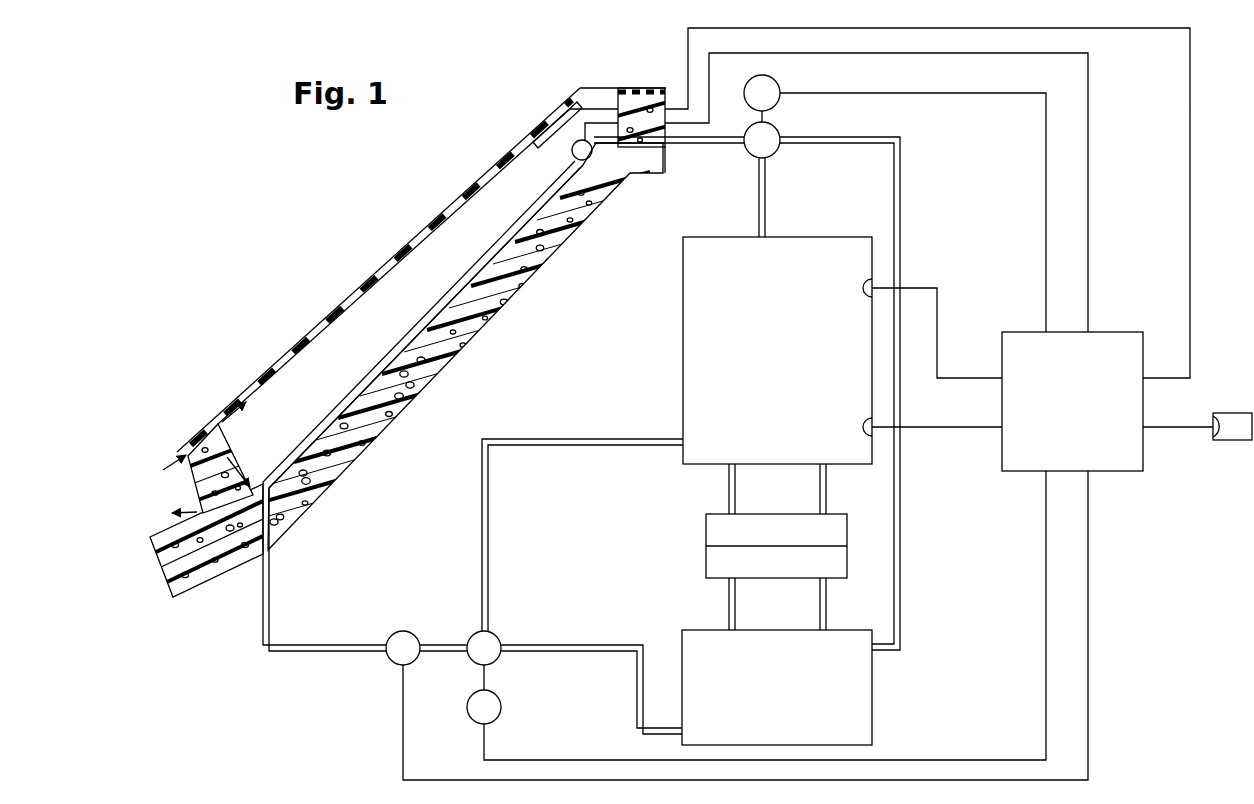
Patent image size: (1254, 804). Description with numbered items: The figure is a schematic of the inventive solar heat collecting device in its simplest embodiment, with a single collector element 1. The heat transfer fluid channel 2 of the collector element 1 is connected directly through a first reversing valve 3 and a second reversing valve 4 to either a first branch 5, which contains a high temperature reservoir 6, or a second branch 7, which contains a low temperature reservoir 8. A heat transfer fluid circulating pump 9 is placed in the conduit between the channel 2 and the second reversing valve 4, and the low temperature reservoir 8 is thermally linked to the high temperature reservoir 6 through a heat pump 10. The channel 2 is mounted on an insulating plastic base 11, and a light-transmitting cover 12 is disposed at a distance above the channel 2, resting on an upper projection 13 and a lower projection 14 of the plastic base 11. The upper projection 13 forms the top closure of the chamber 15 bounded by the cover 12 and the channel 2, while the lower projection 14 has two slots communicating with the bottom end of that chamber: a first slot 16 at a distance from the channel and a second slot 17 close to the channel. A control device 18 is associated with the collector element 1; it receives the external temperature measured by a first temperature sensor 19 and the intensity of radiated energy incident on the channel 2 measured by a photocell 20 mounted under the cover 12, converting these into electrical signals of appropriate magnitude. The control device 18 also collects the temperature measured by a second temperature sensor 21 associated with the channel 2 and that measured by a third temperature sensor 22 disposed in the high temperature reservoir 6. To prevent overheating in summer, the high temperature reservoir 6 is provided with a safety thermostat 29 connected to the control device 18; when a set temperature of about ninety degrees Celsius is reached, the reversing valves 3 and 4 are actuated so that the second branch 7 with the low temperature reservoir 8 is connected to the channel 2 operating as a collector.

The collector element 1 is at (405, 232).
The heat transfer fluid channel 2 is at (414, 330).
The first reversing valve 3 is at (745, 148).
The second reversing valve 4 is at (500, 638).
The first branch 5 is at (567, 446).
The high temperature reservoir 6 is at (700, 303).
The second branch 7 is at (901, 183).
The low temperature reservoir 8 is at (683, 640).
The heat transfer fluid circulating pump 9 is at (405, 630).
The heat pump 10 is at (705, 530).
The insulating plastic base 11 is at (506, 298).
The light-transmitting cover 12 is at (392, 256).
The upper projection 13 is at (668, 100).
The lower projection 14 is at (227, 450).
The chamber 15 is at (462, 218).
The first slot 16 is at (205, 438).
The second slot 17 is at (223, 505).
The control device 18 is at (1020, 472).
The first temperature sensor 19 is at (1240, 441).
The photocell 20 is at (537, 150).
The second temperature sensor 21 is at (618, 182).
The third temperature sensor 22 is at (862, 287).
The safety thermostat 29 is at (862, 426).